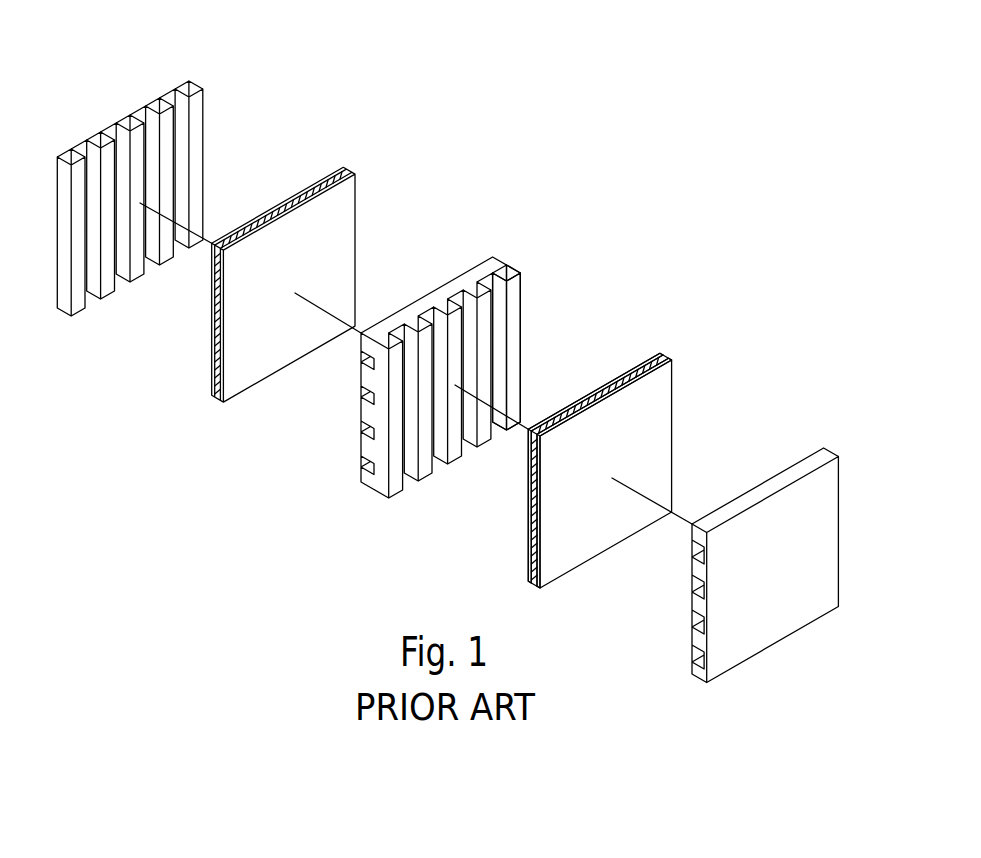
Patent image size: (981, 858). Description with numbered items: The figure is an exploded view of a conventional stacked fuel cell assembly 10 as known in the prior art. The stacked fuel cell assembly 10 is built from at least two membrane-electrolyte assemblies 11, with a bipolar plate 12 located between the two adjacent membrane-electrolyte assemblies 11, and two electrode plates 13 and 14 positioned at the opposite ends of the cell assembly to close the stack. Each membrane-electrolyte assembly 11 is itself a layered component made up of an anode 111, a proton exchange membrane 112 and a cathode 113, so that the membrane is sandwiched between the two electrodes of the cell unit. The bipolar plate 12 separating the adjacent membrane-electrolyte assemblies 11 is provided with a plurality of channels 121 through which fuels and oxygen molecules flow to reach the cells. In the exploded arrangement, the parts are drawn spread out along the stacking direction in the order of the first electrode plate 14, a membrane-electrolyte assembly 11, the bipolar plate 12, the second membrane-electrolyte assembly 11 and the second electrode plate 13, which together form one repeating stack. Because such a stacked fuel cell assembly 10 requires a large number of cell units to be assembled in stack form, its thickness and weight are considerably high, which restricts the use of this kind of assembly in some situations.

The stacked fuel cell assembly 10 is at (428, 37).
The membrane-electrolyte assembly 11 is at (213, 385).
The anode 111 is at (662, 352).
The proton exchange membrane 112 is at (667, 357).
The cathode 113 is at (672, 360).
The bipolar plate 12 is at (510, 263).
The channel 121 is at (493, 277).
The electrode plate 13 is at (823, 455).
The electrode plate 14 is at (192, 88).